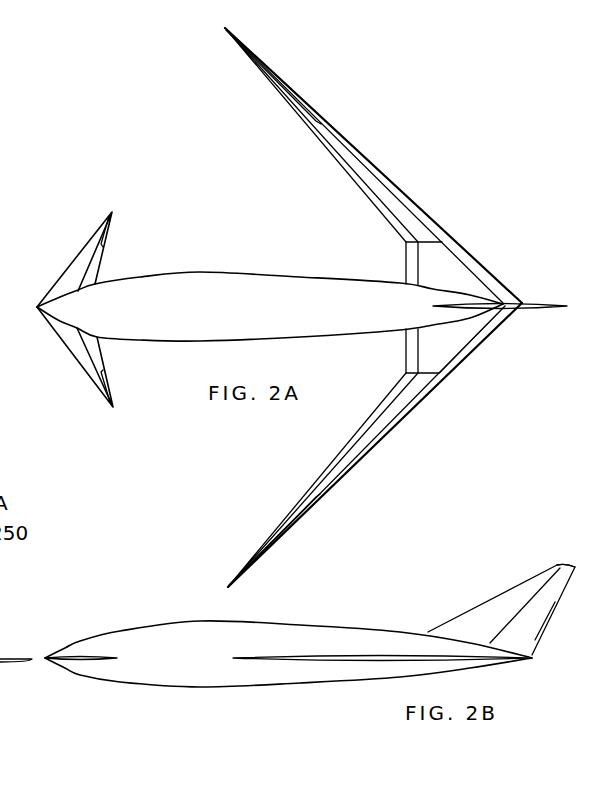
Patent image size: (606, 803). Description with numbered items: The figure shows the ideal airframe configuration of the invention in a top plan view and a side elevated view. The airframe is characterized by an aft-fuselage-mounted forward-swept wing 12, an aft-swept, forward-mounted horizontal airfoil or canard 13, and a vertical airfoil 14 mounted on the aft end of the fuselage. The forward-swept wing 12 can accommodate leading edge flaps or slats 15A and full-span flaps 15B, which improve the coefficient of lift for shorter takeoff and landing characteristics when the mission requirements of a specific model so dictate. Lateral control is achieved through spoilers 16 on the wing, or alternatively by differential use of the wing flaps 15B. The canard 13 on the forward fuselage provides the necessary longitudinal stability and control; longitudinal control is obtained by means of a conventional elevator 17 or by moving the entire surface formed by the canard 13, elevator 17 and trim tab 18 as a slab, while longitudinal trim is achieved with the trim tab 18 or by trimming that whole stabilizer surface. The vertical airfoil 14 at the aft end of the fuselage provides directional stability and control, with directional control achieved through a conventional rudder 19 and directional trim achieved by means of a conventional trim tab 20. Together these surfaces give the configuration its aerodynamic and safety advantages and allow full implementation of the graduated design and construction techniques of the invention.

In FIG. 2A, the forward-swept wing 12 is at (425, 360).
In FIG. 2A, the canard 13 is at (88, 247).
In FIG. 2B, the canard 13 is at (82, 647).
In FIG. 2A, the vertical airfoil 14 is at (527, 302).
In FIG. 2B, the vertical airfoil 14 is at (482, 608).
In FIG. 2A, the leading edge flaps or slats 15A is at (347, 449).
In FIG. 2A, the full-span flaps 15B is at (446, 376).
In FIG. 2A, the spoilers 16 is at (302, 518).
In FIG. 2A, the elevator 17 is at (98, 264).
In FIG. 2A, the trim tab 18 is at (110, 387).
In FIG. 2B, the rudder 19 is at (562, 567).
In FIG. 2B, the trim tab 20 is at (538, 637).